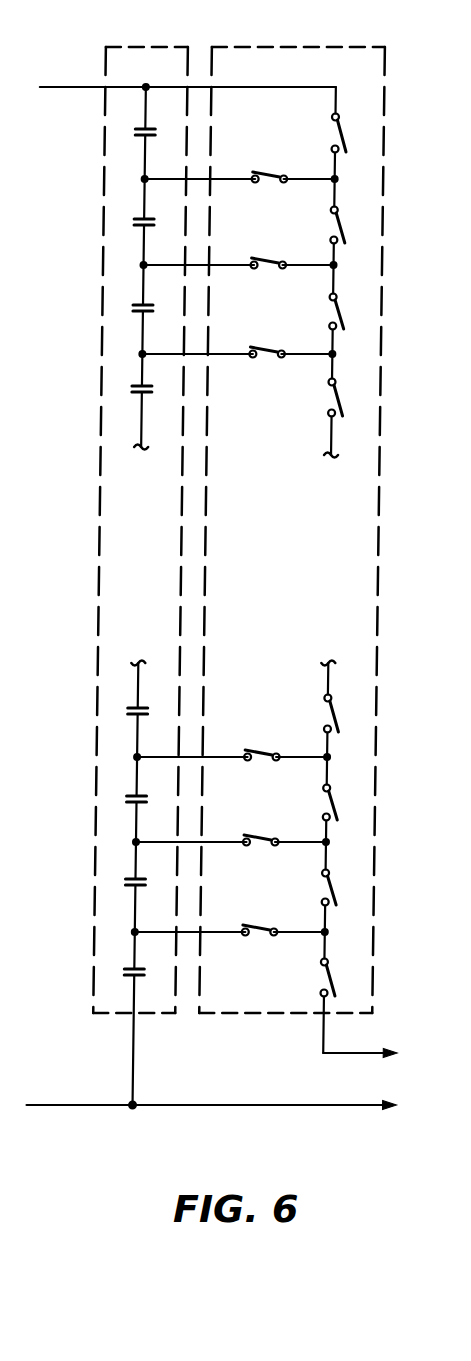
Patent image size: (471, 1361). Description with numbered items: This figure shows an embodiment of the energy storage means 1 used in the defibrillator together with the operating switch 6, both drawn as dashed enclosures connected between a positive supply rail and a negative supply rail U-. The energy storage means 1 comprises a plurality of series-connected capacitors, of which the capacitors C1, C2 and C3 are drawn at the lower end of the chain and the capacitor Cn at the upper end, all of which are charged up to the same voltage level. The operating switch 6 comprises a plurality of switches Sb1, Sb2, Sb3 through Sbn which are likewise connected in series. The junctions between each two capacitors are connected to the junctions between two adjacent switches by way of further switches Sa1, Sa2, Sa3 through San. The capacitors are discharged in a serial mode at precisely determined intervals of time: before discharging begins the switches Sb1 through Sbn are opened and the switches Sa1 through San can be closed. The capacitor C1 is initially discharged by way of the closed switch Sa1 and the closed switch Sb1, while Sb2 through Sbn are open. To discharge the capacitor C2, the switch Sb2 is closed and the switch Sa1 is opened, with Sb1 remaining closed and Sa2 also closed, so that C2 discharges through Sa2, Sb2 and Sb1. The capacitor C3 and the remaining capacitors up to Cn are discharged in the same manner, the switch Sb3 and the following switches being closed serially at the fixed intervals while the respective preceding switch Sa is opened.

The energy storage means 1 is at (119, 51).
The operating switch 6 is at (229, 51).
The negative supply rail U- is at (211, 1094).
The capacitor Cn is at (133, 133).
The capacitor C1 is at (121, 974).
The capacitor C2 is at (122, 884).
The capacitor C3 is at (123, 800).
The further switch San is at (269, 188).
The further switch Sa1 is at (262, 942).
The further switch Sa2 is at (263, 851).
The further switch Sa3 is at (264, 766).
The switch Sbn is at (358, 132).
The switch Sb1 is at (344, 974).
The switch Sb2 is at (346, 884).
The switch Sb3 is at (347, 800).